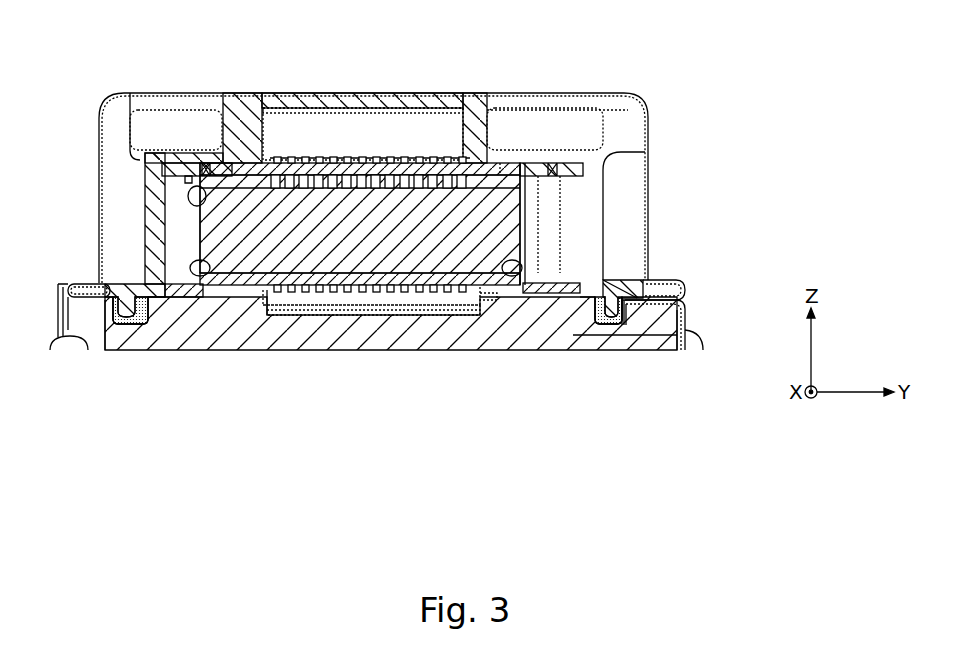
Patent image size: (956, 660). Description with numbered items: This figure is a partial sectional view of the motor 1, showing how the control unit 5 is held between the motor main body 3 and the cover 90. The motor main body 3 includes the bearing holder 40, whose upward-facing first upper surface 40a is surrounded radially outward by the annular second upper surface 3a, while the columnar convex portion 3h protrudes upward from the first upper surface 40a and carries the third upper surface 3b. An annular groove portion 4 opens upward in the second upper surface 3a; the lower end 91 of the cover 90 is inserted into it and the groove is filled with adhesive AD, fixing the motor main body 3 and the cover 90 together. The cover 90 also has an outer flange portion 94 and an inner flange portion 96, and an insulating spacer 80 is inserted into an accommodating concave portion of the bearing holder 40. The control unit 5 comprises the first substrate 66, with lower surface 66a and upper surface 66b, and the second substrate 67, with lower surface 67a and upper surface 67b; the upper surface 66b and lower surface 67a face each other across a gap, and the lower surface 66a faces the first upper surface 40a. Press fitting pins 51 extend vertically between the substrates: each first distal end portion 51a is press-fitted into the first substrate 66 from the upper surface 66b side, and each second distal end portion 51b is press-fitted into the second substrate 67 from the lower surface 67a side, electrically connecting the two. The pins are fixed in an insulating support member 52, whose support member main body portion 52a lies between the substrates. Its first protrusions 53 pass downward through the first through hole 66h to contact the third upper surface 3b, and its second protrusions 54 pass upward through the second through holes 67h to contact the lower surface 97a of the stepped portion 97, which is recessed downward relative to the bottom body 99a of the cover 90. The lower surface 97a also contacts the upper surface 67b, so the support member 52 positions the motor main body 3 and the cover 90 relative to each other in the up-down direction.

The motor 1 is at (704, 53).
The motor main body 3 is at (703, 342).
The second upper surface 3a is at (128, 326).
The third upper surface 3b is at (175, 298).
The columnar convex portion 3h is at (184, 292).
The groove portion 4 is at (625, 304).
The control unit 5 is at (437, 147).
The bearing holder 40 is at (645, 318).
The first upper surface 40a is at (490, 302).
The press fitting pin 51 is at (310, 316).
The first distal end portion 51a is at (282, 300).
The second distal end portion 51b is at (280, 170).
The support member 52 is at (523, 227).
The support member main body portion 52a is at (455, 287).
The first protrusions 53 is at (538, 273).
The second protrusions 54 is at (200, 165).
The first substrate 66 is at (342, 296).
The lower surface 66a is at (372, 290).
The upper surface 66b is at (405, 285).
The first through hole 66h is at (205, 265).
The second substrate 67 is at (330, 170).
The lower surface 67a is at (372, 176).
The upper surface 67b is at (356, 158).
The second through holes 67h is at (203, 192).
The spacer 80 is at (268, 320).
The cover 90 is at (121, 94).
The lower end 91 is at (612, 322).
The outer flange portion 94 is at (650, 270).
The inner flange portion 96 is at (603, 280).
The stepped portion 97 is at (185, 159).
The lower surface 97a is at (187, 178).
The bottom body 99a is at (421, 98).
The adhesive AD is at (687, 299).